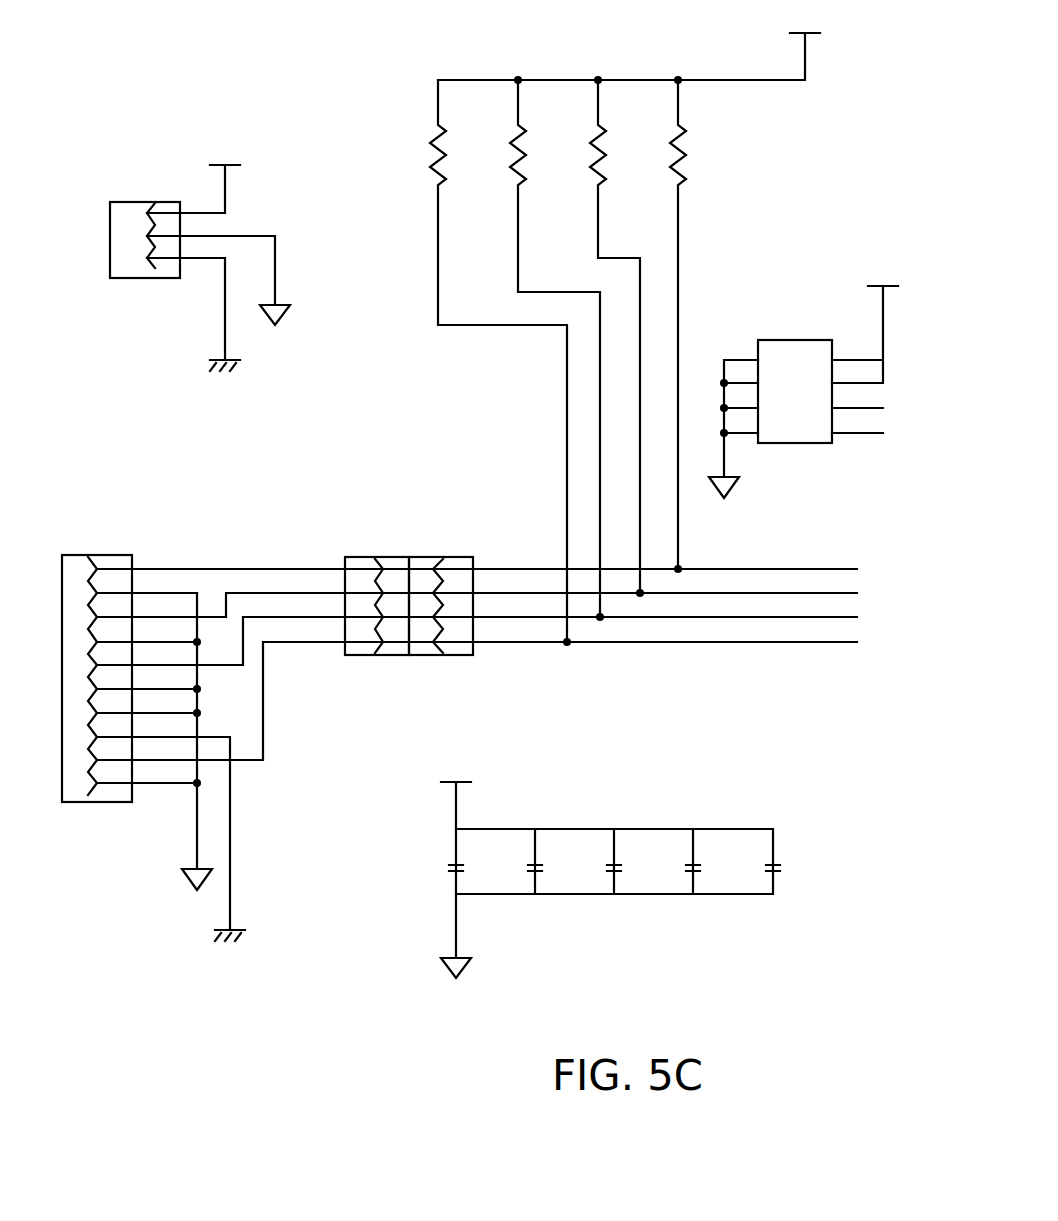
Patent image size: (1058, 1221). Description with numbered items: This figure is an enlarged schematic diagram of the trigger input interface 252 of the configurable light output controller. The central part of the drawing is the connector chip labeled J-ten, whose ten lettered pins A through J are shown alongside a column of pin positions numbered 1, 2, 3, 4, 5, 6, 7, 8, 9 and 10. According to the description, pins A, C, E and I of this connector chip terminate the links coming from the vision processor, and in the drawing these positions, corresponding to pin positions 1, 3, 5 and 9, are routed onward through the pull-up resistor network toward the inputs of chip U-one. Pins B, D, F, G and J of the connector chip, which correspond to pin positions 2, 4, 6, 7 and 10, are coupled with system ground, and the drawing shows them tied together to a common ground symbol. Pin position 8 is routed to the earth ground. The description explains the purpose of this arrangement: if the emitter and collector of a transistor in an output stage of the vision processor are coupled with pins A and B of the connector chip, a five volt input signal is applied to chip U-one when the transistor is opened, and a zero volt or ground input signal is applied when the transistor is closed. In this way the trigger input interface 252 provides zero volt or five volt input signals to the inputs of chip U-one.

The trigger input interface 252 is at (341, 1072).
The J10 connector pin 1 is at (477, 559).
The J10 connector pin 2 is at (147, 583).
The J10 connector pin 3 is at (477, 605).
The J10 connector pin 4 is at (147, 632).
The J10 connector pin 5 is at (477, 641).
The J10 connector pin 6 is at (147, 679).
The J10 connector pin 7 is at (147, 703).
The J10 connector pin 8 is at (163, 823).
The J10 connector pin 9 is at (477, 701).
The J10 connector pin 10 is at (147, 773).